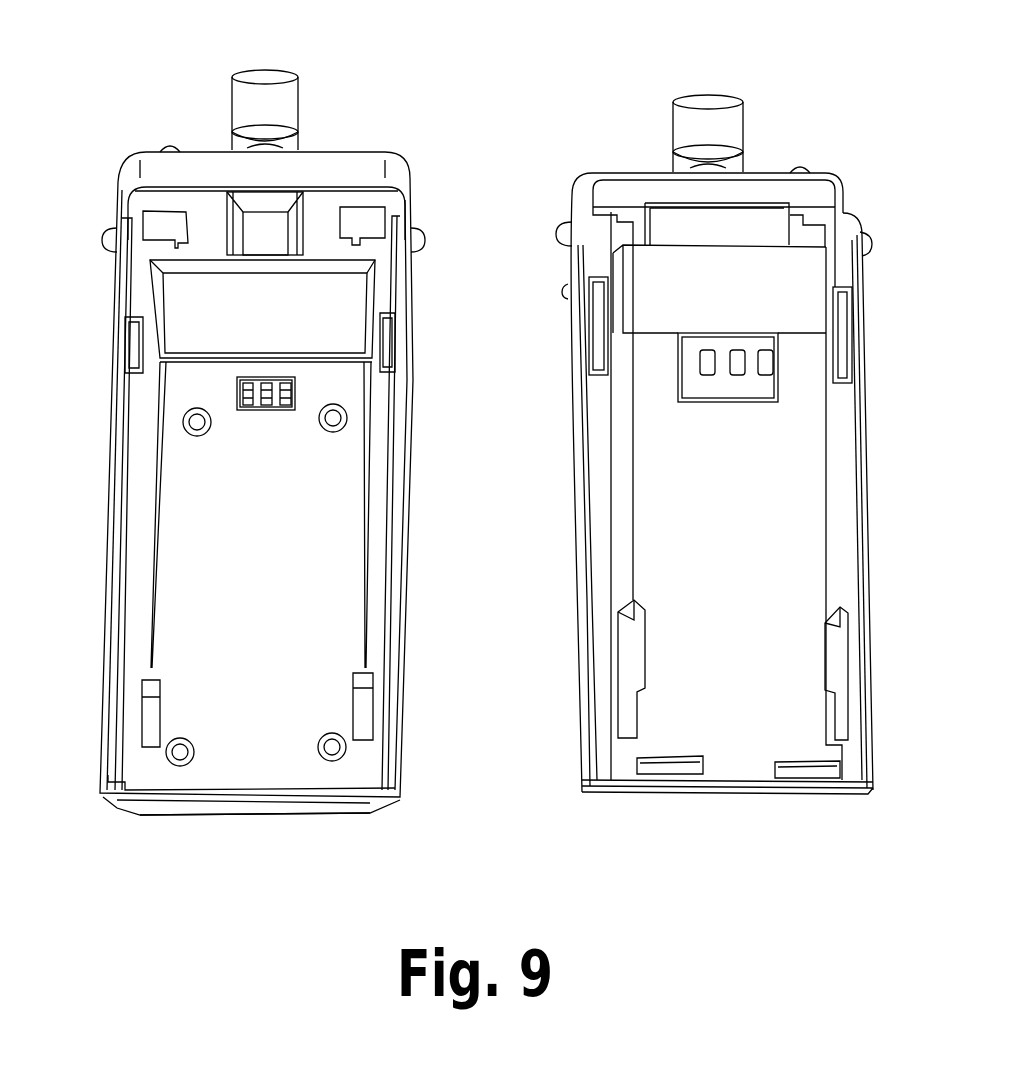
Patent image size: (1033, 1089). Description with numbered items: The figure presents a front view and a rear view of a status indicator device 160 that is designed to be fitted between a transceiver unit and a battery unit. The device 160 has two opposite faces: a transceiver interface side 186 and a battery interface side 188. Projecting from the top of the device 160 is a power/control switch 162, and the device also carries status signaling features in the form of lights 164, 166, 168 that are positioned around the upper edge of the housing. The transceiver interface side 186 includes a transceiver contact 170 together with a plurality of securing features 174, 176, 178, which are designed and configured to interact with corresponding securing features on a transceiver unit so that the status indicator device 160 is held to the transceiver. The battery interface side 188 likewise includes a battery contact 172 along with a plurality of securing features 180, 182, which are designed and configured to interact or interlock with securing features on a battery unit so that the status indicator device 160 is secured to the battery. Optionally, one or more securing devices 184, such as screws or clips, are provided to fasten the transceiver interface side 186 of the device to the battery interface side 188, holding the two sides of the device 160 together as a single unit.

The status indicator device 160 is at (360, 160).
The power/control switch 162 is at (290, 100).
The status signaling feature (light) 164 is at (170, 150).
The status signaling feature (light) 166 is at (420, 235).
The status signaling feature (light) 168 is at (110, 240).
The transceiver contact 170 is at (760, 360).
The battery contact 172 is at (240, 395).
The securing feature 174 is at (597, 325).
The securing feature 176 is at (637, 665).
The securing feature 178 is at (670, 770).
The securing feature 180 is at (145, 710).
The securing feature 182 is at (130, 340).
The securing device 184 is at (335, 418).
The transceiver interface side 186 is at (850, 485).
The battery interface side 188 is at (200, 806).